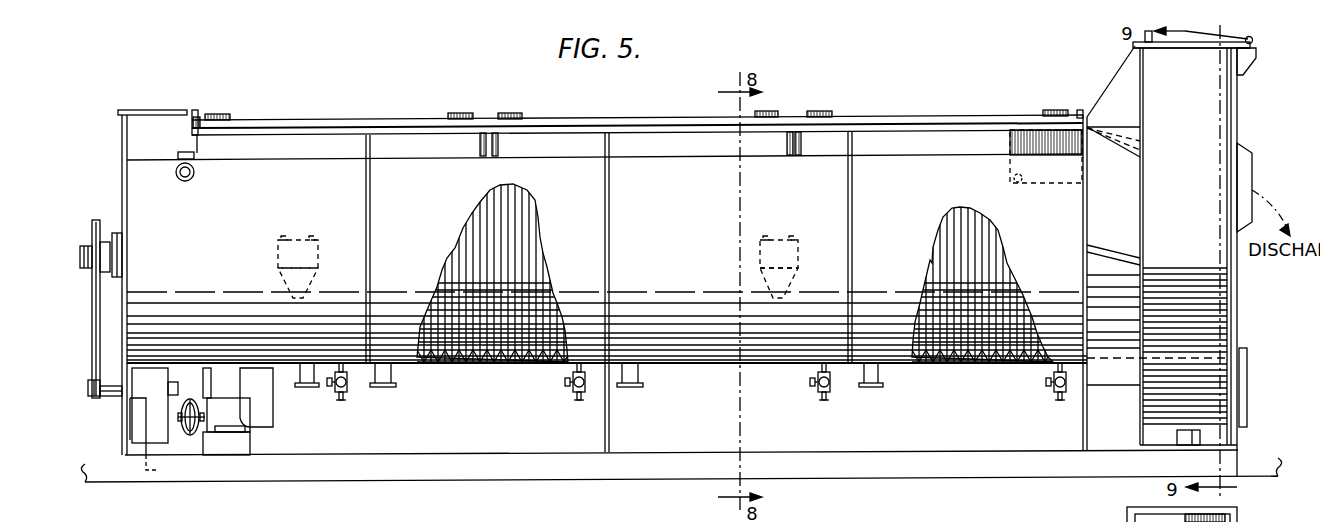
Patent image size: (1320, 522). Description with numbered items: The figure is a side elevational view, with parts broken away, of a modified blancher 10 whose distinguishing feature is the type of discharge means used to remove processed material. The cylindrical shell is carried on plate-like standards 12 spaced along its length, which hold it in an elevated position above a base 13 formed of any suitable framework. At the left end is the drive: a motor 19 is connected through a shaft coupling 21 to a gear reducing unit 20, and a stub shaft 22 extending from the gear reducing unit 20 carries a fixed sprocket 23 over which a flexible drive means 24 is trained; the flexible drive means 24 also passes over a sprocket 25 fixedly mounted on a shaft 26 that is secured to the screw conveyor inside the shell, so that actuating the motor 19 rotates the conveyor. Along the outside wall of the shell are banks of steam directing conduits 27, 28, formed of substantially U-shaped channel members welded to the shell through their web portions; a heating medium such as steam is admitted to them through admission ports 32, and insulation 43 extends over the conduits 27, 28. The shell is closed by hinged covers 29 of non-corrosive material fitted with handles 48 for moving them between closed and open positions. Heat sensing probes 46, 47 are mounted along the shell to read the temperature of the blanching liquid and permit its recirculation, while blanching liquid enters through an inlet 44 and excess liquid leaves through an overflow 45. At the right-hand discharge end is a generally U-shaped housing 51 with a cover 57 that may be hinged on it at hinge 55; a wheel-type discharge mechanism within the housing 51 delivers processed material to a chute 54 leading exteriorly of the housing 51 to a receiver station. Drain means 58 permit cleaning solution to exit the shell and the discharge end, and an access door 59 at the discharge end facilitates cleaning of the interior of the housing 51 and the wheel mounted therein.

The blancher 10 is at (303, 114).
The plate-like standards 12 is at (122, 428).
The base 13 is at (912, 452).
The motor 19 is at (268, 405).
The gear reducing unit 20 is at (157, 428).
The shaft coupling 21 is at (188, 435).
The stub shaft 22 is at (112, 393).
The sprocket 23 is at (90, 384).
The flexible drive means 24 is at (92, 312).
The sprocket 25 is at (85, 242).
The shaft 26 is at (115, 239).
The steam directing conduits 27 is at (497, 231).
The steam directing conduits 28 is at (990, 263).
The covers 29 is at (379, 120).
The admission ports 32 is at (342, 400).
The insulation 43 is at (472, 365).
The inlet 44 is at (194, 172).
The overflow 45 is at (1012, 178).
The heat sensing probe 46 is at (280, 262).
The heat sensing probe 47 is at (792, 262).
The handles 48 is at (230, 113).
The U-shaped housing 51 is at (1185, 320).
The chute 54 is at (1252, 170).
The hinge 55 is at (1256, 48).
The cover 57 is at (1183, 44).
The drain means 58 is at (317, 387).
The access door 59 is at (1247, 395).